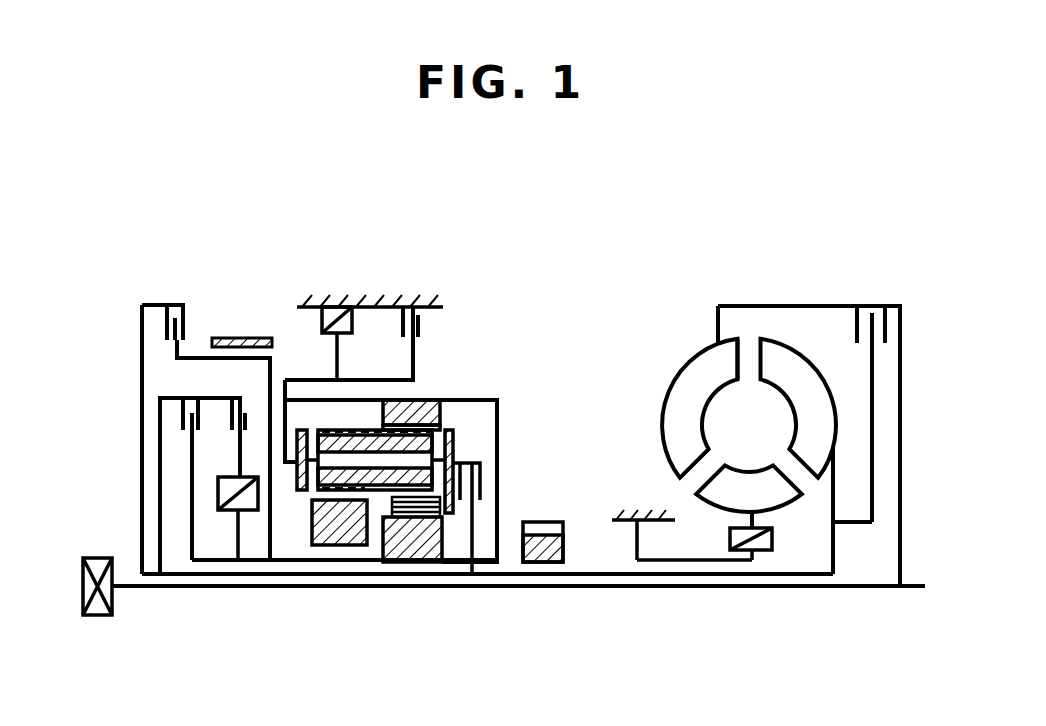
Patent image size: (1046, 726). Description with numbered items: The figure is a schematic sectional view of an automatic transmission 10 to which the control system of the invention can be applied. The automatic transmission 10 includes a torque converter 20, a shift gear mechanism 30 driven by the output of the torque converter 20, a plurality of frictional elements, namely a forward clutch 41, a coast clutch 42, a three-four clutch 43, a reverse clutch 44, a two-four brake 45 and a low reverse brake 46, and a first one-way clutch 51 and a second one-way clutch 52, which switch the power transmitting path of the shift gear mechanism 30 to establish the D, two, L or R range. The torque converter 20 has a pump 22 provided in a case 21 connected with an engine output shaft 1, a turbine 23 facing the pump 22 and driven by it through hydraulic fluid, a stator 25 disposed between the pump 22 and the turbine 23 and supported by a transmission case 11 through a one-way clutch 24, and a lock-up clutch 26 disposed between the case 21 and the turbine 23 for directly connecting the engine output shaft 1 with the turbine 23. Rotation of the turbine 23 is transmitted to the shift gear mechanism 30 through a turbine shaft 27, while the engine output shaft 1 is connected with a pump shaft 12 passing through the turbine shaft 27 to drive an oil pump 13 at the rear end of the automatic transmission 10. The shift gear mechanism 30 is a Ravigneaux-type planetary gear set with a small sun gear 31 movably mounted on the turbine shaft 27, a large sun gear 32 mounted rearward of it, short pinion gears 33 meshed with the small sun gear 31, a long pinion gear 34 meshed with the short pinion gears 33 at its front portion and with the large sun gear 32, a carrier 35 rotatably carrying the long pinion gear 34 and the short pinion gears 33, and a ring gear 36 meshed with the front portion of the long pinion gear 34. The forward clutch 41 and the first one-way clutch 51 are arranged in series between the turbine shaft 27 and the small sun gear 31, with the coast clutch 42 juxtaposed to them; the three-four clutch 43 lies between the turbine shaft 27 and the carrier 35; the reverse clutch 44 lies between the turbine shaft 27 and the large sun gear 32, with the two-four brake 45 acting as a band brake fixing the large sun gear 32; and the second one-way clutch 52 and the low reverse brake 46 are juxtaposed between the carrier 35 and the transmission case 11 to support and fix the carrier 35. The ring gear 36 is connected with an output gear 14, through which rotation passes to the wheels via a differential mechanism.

The engine output shaft 1 is at (910, 590).
The automatic transmission 10 is at (902, 296).
The transmission case 11 is at (380, 301).
The pump shaft 12 is at (200, 588).
The oil pump 13 is at (107, 617).
The output gear 14 is at (546, 522).
The torque converter 20 is at (836, 300).
The case 21 is at (750, 305).
The pump 22 is at (688, 377).
The turbine 23 is at (790, 368).
The one-way clutch 24 is at (772, 536).
The stator 25 is at (727, 484).
The lock-up clutch 26 is at (886, 318).
The turbine shaft 27 is at (598, 573).
The shift gear mechanism 30 is at (506, 455).
The small sun gear 31 is at (413, 562).
The large sun gear 32 is at (344, 540).
The short pinion gears 33 is at (427, 520).
The long pinion gear 34 is at (352, 435).
The carrier 35 is at (448, 430).
The ring gear 36 is at (421, 400).
The forward clutch 41 is at (243, 418).
The coast clutch 42 is at (207, 418).
The 3-4 clutch 43 is at (472, 463).
The reverse clutch 44 is at (189, 325).
The 2-4 brake 45 is at (243, 337).
The low reverse brake 46 is at (424, 323).
The first one-way clutch 51 is at (220, 508).
The second one-way clutch 52 is at (352, 320).